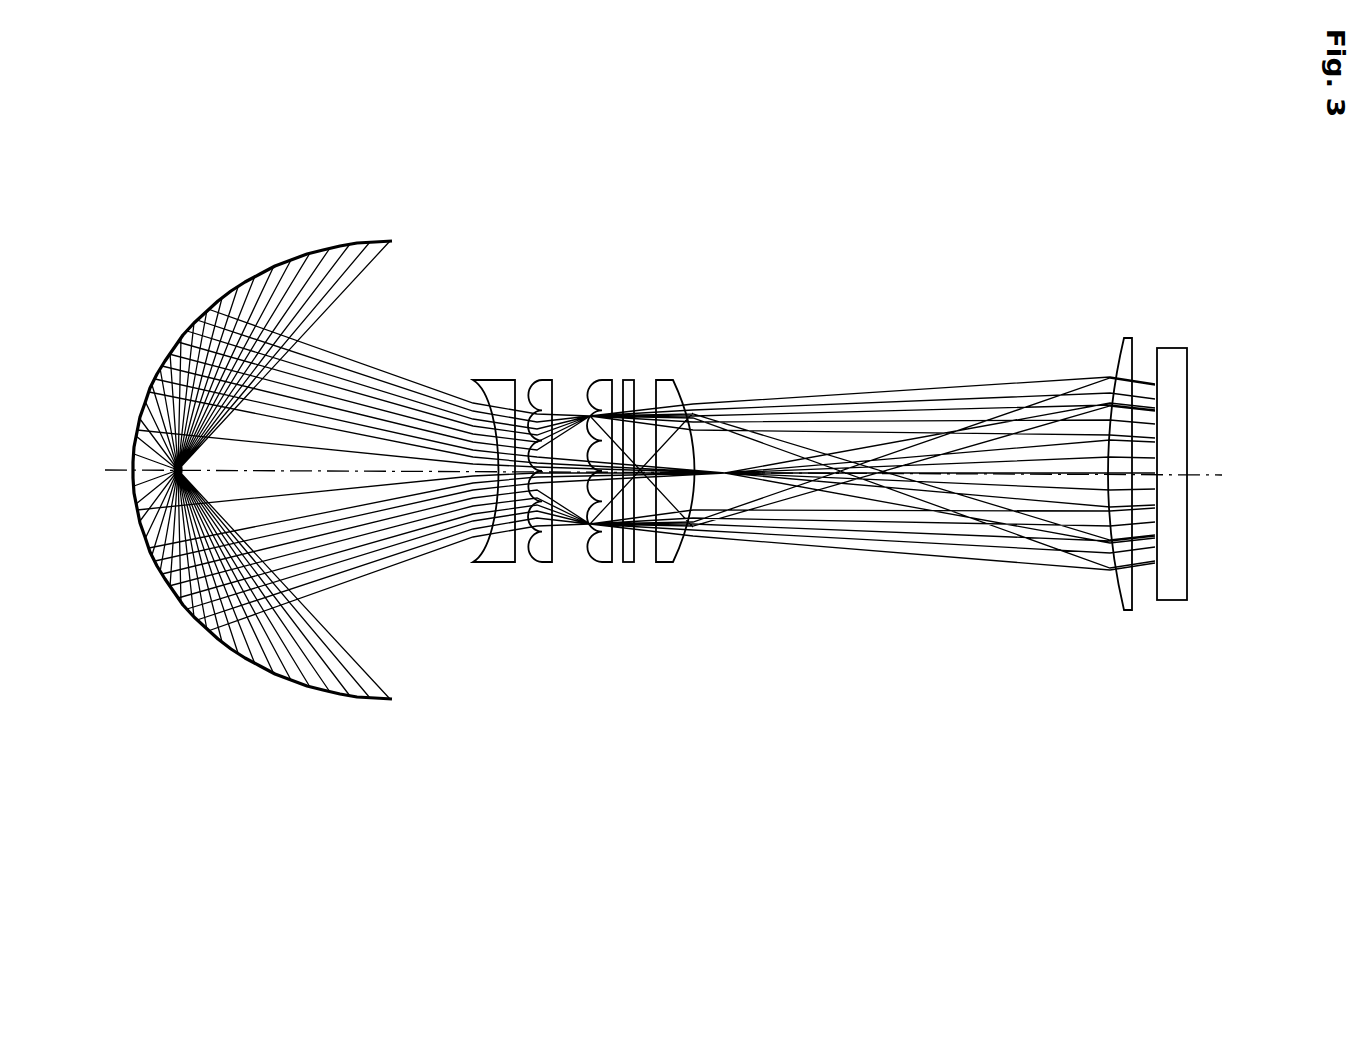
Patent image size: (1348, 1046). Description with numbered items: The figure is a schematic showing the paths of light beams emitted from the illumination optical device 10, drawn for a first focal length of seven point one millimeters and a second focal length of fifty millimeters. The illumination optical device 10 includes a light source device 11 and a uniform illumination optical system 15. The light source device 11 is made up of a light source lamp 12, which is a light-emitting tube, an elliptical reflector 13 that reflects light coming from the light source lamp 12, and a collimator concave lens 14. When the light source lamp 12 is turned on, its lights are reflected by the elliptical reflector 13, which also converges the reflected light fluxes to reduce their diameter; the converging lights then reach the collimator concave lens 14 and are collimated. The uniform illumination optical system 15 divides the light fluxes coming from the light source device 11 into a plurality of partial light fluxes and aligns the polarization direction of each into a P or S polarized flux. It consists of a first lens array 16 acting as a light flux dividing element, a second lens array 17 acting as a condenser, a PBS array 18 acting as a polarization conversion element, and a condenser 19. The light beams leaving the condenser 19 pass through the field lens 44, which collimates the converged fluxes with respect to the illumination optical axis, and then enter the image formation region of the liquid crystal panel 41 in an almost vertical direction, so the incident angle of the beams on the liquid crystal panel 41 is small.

The illumination optical device 10 is at (585, 268).
The light source device 11 is at (478, 752).
The light source lamp 12 is at (186, 470).
The elliptical reflector 13 is at (270, 675).
The collimator concave lens 14 is at (492, 563).
The uniform illumination optical system 15 is at (697, 652).
The first lens array 16 is at (542, 564).
The second lens array 17 is at (604, 564).
The PBS array 18 is at (633, 564).
The condenser 19 is at (670, 564).
The liquid crystal panel 41 is at (1187, 378).
The field lens 44 is at (1127, 611).